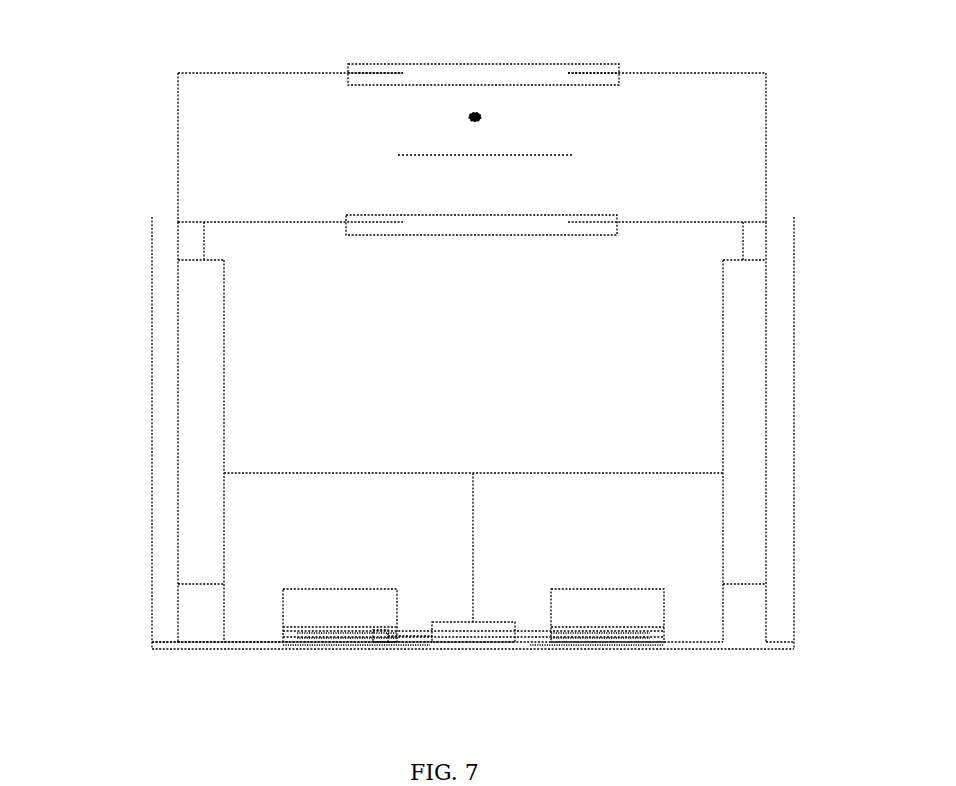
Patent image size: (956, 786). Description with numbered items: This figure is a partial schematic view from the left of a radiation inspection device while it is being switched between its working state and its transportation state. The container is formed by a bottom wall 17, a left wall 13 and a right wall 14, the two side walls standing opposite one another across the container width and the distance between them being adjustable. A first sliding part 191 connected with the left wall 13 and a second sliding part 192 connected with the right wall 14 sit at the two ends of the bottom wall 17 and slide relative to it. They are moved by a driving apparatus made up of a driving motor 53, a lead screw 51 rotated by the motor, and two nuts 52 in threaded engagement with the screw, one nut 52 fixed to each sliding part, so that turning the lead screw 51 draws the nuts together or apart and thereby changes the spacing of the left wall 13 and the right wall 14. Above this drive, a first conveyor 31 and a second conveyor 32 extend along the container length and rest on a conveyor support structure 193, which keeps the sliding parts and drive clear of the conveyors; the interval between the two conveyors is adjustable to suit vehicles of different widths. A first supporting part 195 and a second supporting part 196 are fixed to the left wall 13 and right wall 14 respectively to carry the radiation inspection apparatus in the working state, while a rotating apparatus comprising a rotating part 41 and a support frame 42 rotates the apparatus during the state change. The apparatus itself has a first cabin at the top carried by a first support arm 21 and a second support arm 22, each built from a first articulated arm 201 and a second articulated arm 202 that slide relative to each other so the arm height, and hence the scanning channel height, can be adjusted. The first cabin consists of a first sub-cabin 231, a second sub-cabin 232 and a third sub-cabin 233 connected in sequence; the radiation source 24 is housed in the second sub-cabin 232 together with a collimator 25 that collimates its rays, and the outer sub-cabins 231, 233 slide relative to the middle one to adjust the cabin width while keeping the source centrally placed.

The left wall 13 is at (797, 372).
The right wall 14 is at (150, 385).
The bottom wall 17 is at (408, 648).
The first support arm 21 is at (745, 456).
The second support arm 22 is at (188, 446).
The radiation source 24 is at (477, 113).
The collimator 25 is at (518, 155).
The first conveyor 31 is at (604, 604).
The second conveyor 32 is at (283, 640).
The rotating part 41 is at (487, 638).
The support frame 42 is at (510, 475).
The lead screw 51 is at (430, 637).
The nut 52 is at (322, 605).
The driving motor 53 is at (380, 645).
The first sliding part 191 is at (700, 647).
The second sliding part 192 is at (190, 650).
The conveyor support structure 193 is at (360, 645).
The first supporting part 195 is at (748, 612).
The second supporting part 196 is at (188, 612).
The first articulated arm 201 is at (184, 242).
The second articulated arm 202 is at (186, 300).
The first sub-cabin 231 is at (263, 75).
The second sub-cabin 232 is at (446, 65).
The third sub-cabin 233 is at (690, 75).